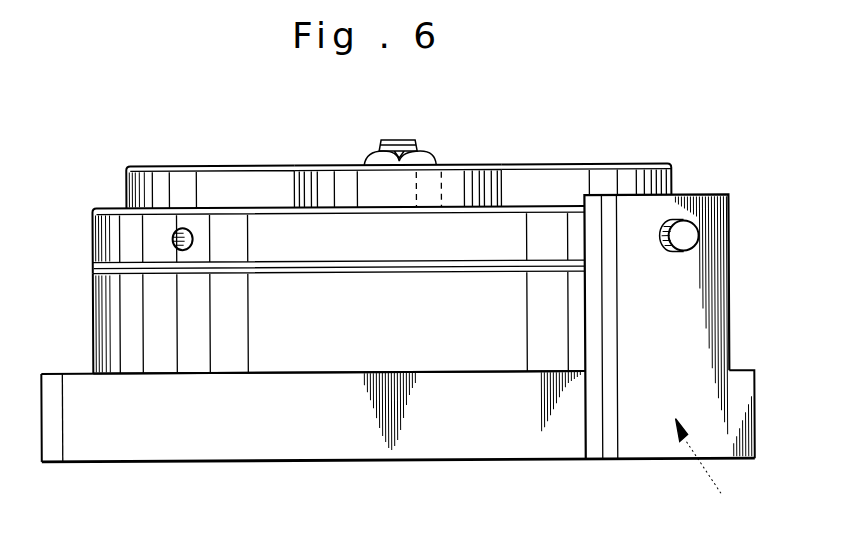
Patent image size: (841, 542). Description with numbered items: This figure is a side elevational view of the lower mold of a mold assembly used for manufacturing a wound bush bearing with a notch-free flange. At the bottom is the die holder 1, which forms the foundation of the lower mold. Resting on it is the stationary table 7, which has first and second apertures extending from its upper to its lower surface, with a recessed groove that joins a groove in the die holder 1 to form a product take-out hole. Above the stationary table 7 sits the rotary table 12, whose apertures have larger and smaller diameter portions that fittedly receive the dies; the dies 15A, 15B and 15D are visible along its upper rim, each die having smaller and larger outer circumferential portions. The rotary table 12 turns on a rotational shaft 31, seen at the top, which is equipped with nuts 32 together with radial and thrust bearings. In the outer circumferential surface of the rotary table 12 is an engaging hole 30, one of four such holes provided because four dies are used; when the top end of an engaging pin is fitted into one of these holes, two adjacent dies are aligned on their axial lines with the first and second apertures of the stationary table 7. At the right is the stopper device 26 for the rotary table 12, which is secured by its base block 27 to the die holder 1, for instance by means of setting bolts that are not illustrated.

The die holder 1 is at (80, 404).
The stationary table 7 is at (108, 320).
The rotary table 12 is at (95, 240).
The die 15A is at (330, 172).
The die 15B is at (168, 166).
The die 15D is at (626, 165).
The stopper device 26 is at (712, 472).
The base block 27 is at (707, 196).
The engaging hole 30 is at (184, 228).
The rotational shaft 31 is at (402, 139).
The nut 32 is at (430, 157).